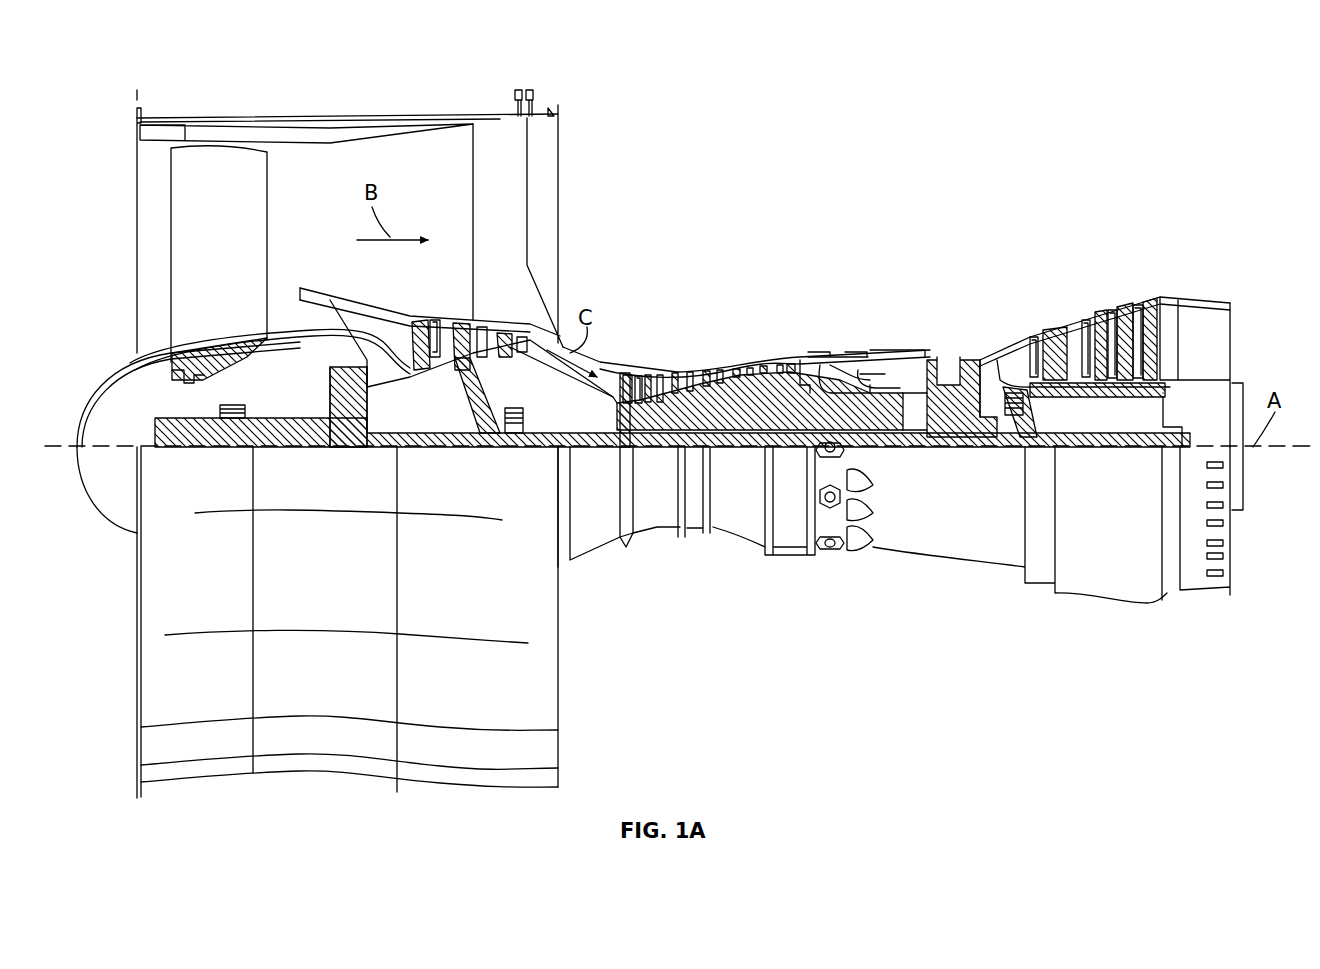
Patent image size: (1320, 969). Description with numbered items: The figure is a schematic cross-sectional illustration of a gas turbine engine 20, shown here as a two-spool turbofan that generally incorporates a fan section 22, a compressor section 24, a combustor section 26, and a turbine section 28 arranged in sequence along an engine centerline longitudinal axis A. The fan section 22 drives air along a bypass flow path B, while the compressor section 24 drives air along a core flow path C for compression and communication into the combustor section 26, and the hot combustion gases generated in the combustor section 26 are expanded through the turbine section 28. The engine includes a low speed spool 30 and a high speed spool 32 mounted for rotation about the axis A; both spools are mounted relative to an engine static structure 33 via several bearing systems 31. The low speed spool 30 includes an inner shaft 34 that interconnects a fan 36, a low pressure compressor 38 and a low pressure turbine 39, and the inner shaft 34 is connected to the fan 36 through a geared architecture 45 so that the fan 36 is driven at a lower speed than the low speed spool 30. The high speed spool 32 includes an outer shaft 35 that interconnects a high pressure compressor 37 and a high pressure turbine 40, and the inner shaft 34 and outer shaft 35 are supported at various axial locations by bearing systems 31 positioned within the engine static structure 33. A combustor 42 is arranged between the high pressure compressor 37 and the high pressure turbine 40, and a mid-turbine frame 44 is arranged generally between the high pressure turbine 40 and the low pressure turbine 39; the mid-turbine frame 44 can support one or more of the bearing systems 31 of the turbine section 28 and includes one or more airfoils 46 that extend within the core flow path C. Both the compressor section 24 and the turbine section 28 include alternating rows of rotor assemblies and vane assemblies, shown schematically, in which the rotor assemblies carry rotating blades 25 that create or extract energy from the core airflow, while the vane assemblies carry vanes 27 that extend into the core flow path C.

The gas turbine engine 20 is at (1185, 84).
The fan section 22 is at (285, 64).
The compressor section 24 is at (618, 195).
The blades 25 is at (420, 328).
The combustor section 26 is at (880, 270).
The vanes 27 is at (443, 333).
The turbine section 28 is at (1088, 230).
The low speed spool 30 is at (750, 452).
The bearing systems 31 is at (230, 405).
The high speed spool 32 is at (780, 397).
The engine static structure 33 is at (788, 547).
The inner shaft 34 is at (585, 447).
The outer shaft 35 is at (947, 427).
The fan 36 is at (230, 266).
The high pressure compressor 37 is at (718, 400).
The low pressure compressor 38 is at (487, 327).
The low pressure turbine 39 is at (1097, 317).
The high pressure turbine 40 is at (950, 355).
The combustor 42 is at (880, 380).
The mid-turbine frame 44 is at (990, 347).
The geared architecture 45 is at (357, 432).
The airfoils 46 is at (1020, 372).